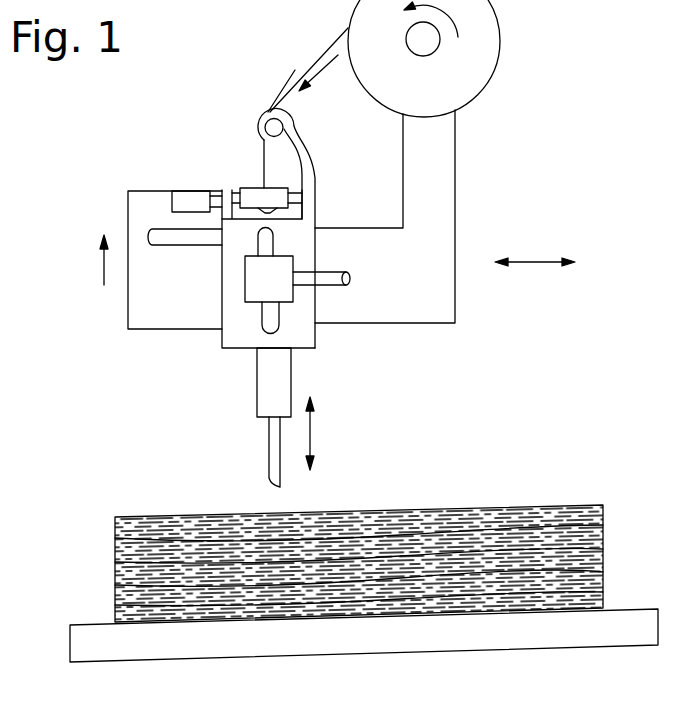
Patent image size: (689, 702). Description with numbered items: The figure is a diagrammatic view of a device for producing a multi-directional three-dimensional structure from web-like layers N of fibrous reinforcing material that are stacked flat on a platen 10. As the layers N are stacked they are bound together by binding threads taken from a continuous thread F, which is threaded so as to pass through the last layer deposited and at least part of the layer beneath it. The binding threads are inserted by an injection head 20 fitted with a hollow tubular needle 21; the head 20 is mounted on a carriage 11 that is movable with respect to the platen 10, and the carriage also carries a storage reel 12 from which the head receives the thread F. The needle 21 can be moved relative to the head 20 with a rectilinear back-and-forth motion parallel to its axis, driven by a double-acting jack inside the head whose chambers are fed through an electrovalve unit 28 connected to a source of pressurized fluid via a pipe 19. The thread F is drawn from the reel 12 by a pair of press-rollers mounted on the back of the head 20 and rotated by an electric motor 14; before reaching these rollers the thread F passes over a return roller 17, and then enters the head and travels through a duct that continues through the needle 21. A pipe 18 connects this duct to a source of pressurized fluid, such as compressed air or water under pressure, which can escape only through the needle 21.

The platen 10 is at (545, 635).
The carriage 11 is at (432, 310).
The storage reel 12 is at (480, 66).
The electric motor 14 is at (183, 191).
The return roller 17 is at (262, 124).
The pipe 18 is at (188, 237).
The pipe 19 is at (337, 272).
The injection head 20 is at (233, 338).
The hollow tubular needle 21 is at (272, 455).
The electrovalve unit 28 is at (245, 288).
The web-like layers N is at (603, 513).
The continuous thread F is at (321, 61).